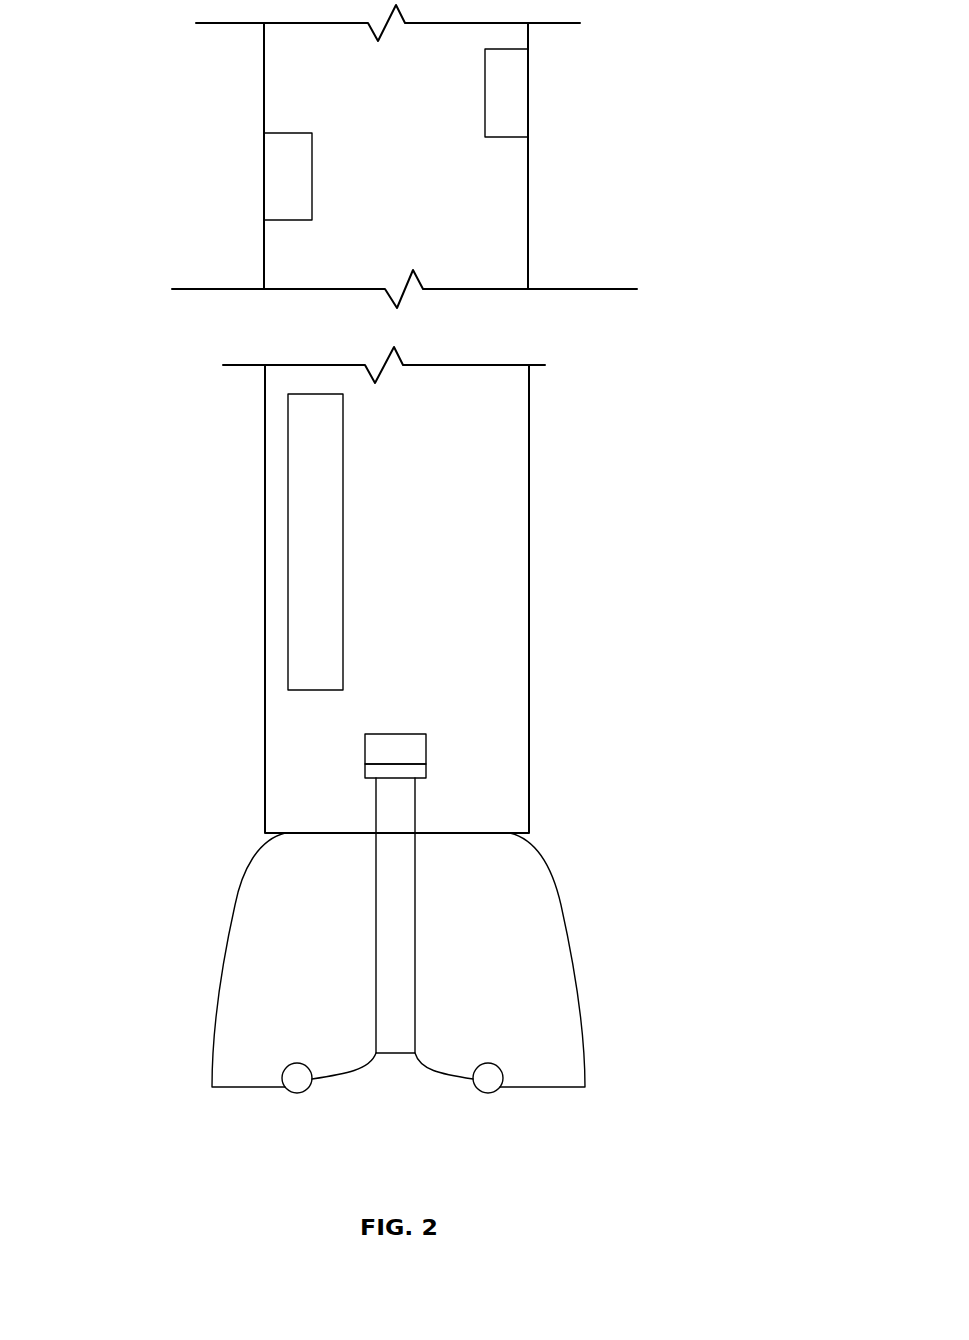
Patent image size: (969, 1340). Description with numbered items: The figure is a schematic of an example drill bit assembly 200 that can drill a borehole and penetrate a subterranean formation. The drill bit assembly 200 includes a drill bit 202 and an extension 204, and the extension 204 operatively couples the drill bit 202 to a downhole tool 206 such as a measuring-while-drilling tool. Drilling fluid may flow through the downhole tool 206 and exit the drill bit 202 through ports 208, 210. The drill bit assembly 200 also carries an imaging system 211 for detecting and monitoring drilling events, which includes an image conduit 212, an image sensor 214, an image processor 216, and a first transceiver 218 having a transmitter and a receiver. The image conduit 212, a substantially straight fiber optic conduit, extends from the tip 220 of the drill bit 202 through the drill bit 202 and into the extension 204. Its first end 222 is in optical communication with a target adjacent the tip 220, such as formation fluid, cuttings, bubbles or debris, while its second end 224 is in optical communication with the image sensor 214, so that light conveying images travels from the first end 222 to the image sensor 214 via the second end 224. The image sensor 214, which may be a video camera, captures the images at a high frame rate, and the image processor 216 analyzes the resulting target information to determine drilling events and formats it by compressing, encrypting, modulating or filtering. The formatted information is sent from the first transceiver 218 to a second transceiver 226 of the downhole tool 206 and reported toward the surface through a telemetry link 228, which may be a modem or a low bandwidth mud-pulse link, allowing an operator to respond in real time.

The drill bit assembly 200 is at (162, 443).
The drill bit 202 is at (243, 1012).
The extension 204 is at (288, 753).
The downhole tool 206 is at (283, 267).
The port 208 is at (293, 1083).
The port 210 is at (490, 1080).
The imaging system 211 is at (503, 510).
The image conduit 212 is at (380, 942).
The image sensor 214 is at (417, 770).
The image processor 216 is at (415, 750).
The first transceiver 218 is at (299, 619).
The tip 220 is at (380, 1089).
The first end 222 is at (395, 1052).
The second end 224 is at (399, 778).
The second transceiver 226 is at (277, 171).
The telemetry link 228 is at (512, 83).